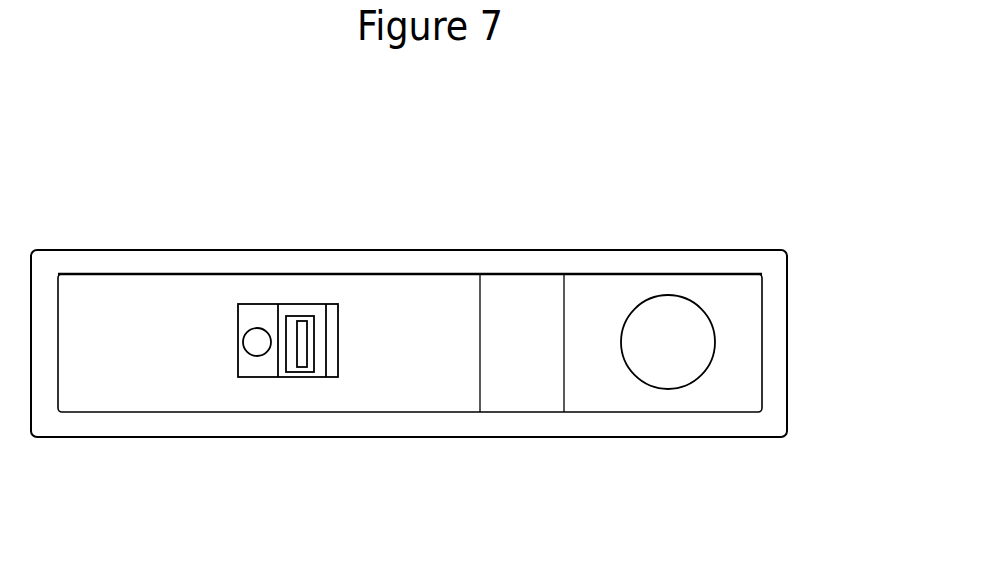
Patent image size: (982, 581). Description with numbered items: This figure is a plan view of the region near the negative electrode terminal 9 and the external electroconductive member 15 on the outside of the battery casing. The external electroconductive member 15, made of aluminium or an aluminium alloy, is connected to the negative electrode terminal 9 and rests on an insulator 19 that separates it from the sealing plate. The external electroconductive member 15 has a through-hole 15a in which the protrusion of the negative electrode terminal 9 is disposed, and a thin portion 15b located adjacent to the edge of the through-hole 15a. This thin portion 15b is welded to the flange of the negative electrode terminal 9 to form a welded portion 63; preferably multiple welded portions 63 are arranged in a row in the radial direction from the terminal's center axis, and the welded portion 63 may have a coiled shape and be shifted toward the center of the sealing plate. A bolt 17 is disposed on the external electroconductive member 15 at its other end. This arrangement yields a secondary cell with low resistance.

The insulator 19 is at (725, 262).
The external electroconductive member 15 is at (516, 325).
The through-hole 15a is at (259, 379).
The thin portion 15b is at (320, 312).
The welded portion 63 is at (303, 378).
The negative electrode terminal 9 is at (258, 336).
The bolt 17 is at (680, 349).